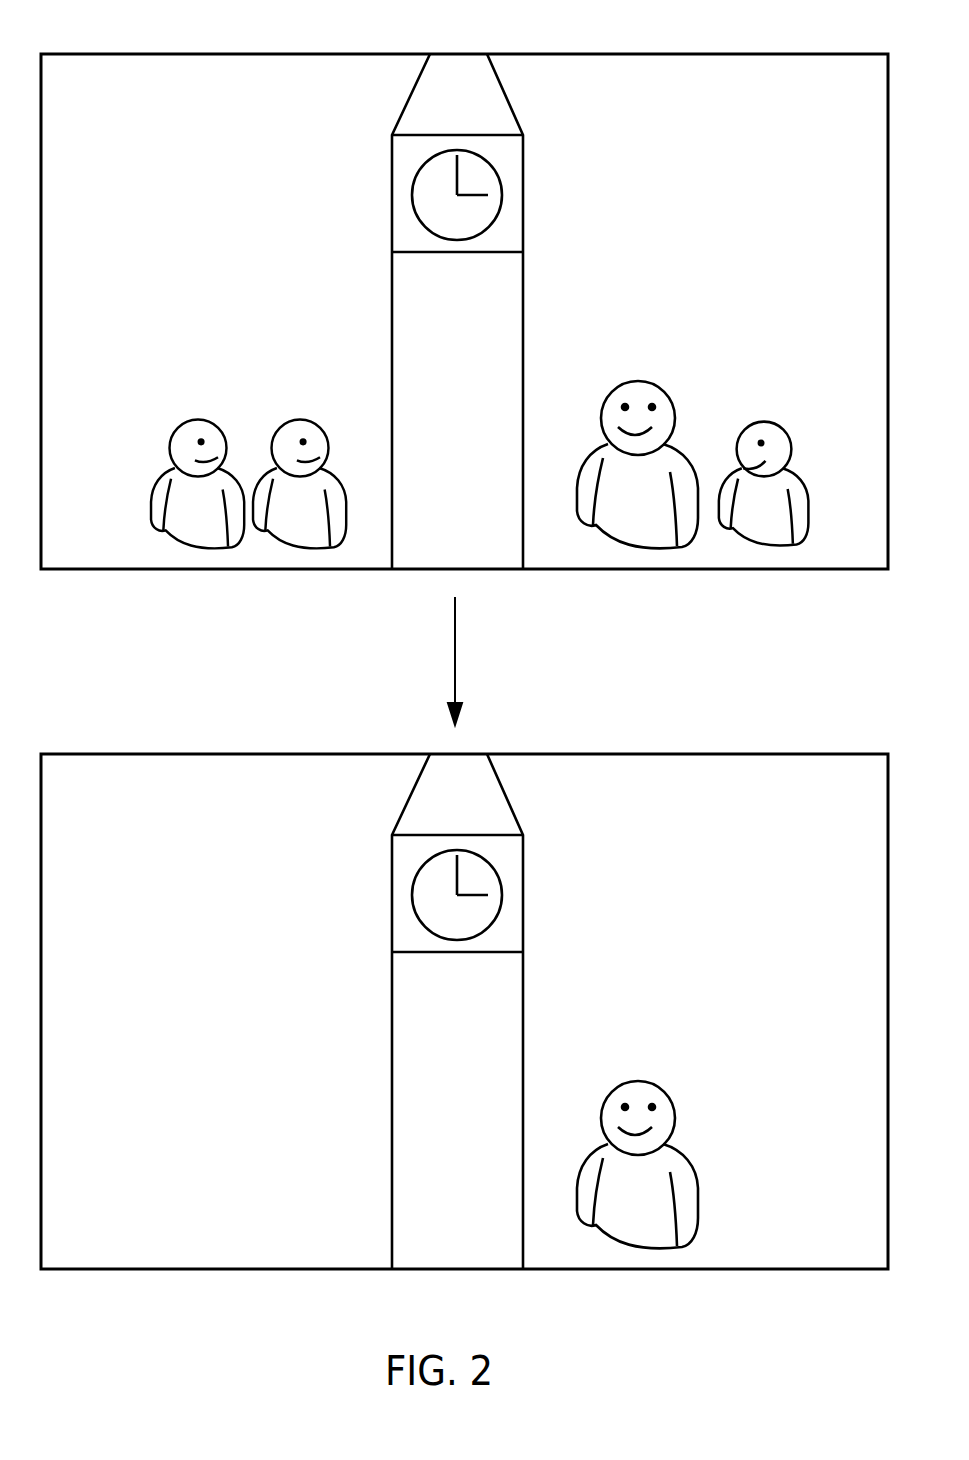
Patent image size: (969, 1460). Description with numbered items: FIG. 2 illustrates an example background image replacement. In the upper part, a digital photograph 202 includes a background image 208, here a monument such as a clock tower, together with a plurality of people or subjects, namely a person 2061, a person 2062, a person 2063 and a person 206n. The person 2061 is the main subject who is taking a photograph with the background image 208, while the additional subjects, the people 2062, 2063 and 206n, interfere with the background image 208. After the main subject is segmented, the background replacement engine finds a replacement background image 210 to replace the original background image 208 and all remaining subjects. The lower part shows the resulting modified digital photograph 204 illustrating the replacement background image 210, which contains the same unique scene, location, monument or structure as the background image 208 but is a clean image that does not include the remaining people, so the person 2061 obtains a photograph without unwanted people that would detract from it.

The digital photograph 202 is at (706, 54).
The modified digital photograph 204 is at (706, 754).
The person (main subject) 2061 is at (638, 1081).
The person (additional subject) 2062 is at (199, 420).
The person (additional subject) 2063 is at (301, 420).
The person (additional subject) 206n is at (759, 445).
The background image 208 is at (732, 392).
The replacement background image 210 is at (570, 907).